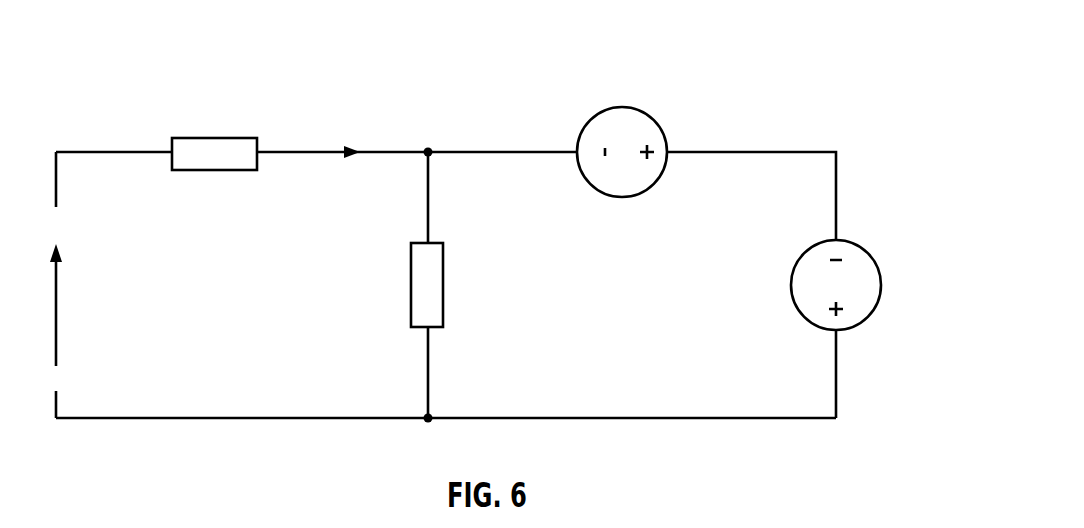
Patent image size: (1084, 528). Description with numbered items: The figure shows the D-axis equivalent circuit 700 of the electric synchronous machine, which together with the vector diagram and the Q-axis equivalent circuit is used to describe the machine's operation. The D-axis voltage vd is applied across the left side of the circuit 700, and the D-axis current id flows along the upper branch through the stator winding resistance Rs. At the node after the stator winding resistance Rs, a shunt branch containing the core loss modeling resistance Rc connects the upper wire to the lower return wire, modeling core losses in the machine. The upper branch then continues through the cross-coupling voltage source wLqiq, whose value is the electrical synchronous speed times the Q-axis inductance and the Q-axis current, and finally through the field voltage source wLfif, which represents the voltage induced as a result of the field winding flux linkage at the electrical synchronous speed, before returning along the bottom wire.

The D-axis equivalent circuit 700 is at (505, 216).
The stator winding resistance Rs is at (214, 182).
The core loss modeling resistance Rc is at (457, 285).
The D-axis current id is at (349, 174).
The D-axis voltage vd is at (71, 305).
The Q-axis cross-coupling voltage source wLqiq is at (622, 127).
The field winding induced voltage source wLfif is at (876, 285).